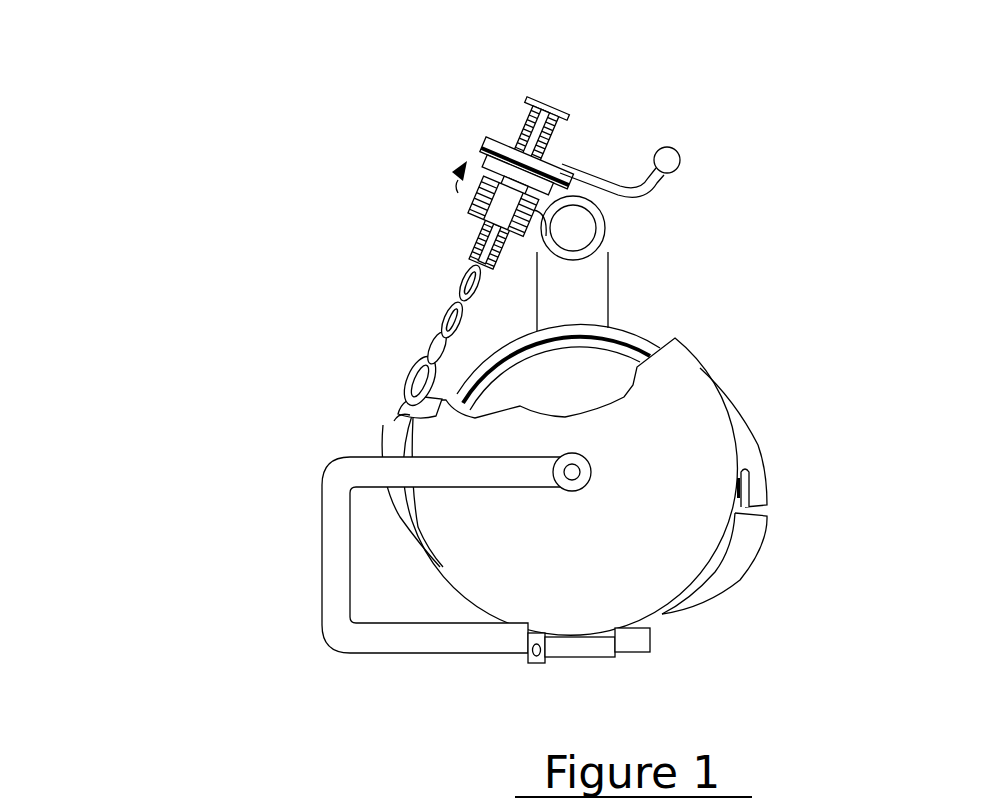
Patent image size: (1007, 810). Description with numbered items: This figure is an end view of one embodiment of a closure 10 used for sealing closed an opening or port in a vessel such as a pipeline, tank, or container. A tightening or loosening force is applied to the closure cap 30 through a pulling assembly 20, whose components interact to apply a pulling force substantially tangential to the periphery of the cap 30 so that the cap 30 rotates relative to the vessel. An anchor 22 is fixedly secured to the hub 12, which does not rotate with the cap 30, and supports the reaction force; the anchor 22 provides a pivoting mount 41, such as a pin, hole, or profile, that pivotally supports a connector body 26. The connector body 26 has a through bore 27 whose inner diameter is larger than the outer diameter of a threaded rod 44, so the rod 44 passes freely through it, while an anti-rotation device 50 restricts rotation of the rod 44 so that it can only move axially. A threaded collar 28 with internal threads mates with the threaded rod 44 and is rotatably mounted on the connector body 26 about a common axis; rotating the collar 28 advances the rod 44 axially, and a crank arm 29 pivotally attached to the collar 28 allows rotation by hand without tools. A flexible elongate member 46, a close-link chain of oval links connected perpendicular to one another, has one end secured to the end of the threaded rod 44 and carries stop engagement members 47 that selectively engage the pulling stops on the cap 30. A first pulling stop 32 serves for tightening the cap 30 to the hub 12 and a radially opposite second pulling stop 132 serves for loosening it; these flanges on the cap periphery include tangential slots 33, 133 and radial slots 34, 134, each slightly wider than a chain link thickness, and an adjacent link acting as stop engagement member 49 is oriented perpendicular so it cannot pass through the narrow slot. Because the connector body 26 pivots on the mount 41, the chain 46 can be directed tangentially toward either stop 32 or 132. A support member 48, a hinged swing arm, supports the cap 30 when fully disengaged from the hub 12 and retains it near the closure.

The closure 10 is at (552, 359).
The hub 12 is at (512, 336).
The pulling assembly 20 is at (495, 187).
The anchor 22 is at (592, 309).
The connector body 26 is at (468, 199).
The through bore 27 is at (500, 157).
The threaded collar 28 is at (490, 140).
The crank arm 29 is at (606, 183).
The closure cap 30 is at (661, 530).
The first pulling stop 32 is at (392, 408).
The tangential slot 33 is at (394, 418).
The radial slot 34 is at (390, 427).
The pivoting mount 41 is at (575, 229).
The threaded rod 44 is at (533, 100).
The flexible elongate member 46 is at (335, 298).
The stop engagement member 47 is at (431, 336).
The support member 48 is at (423, 638).
The stop engagement member 49 is at (408, 364).
The anti-rotation device 50 is at (462, 188).
The second pulling stop 132 is at (762, 445).
The tangential slot 133 is at (745, 494).
The radial slot 134 is at (745, 515).